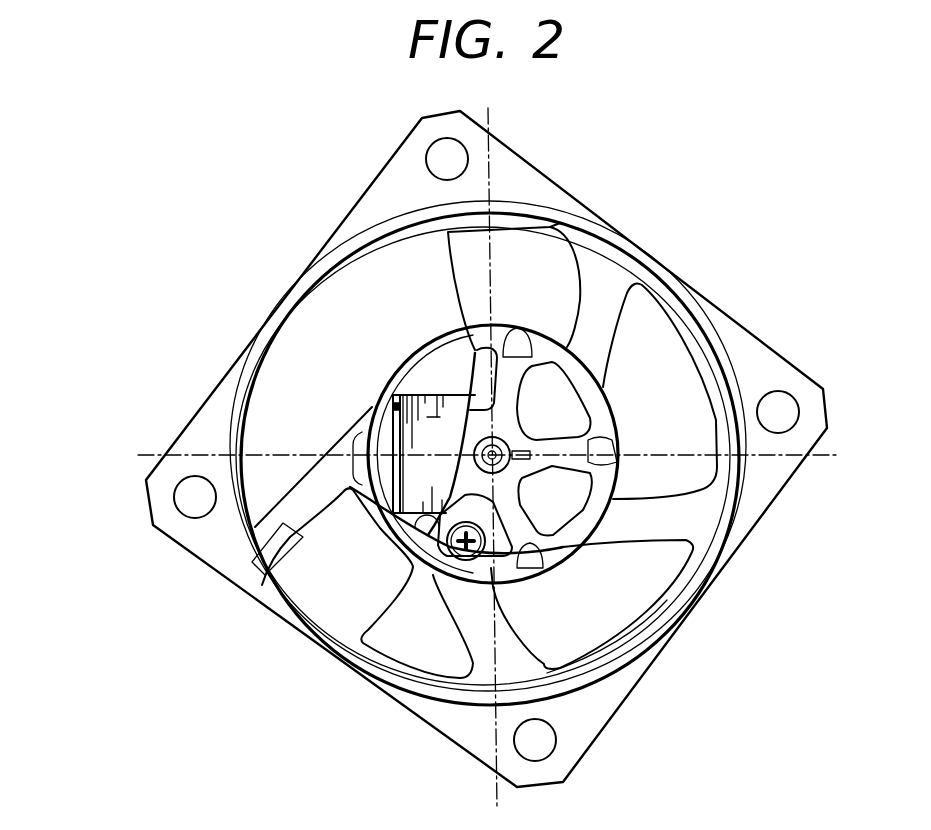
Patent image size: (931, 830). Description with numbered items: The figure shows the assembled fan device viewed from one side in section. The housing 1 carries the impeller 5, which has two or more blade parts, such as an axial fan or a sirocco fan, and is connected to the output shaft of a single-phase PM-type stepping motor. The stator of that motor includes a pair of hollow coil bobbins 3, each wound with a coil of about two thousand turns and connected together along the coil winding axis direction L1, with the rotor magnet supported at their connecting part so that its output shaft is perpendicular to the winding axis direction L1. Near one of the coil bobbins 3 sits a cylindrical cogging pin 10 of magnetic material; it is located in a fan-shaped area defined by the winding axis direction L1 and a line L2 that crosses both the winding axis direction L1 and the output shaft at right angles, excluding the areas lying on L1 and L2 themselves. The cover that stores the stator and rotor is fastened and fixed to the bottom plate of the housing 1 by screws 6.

The housing 1 is at (228, 383).
The coil bobbins 3 is at (393, 420).
The impeller 5 is at (657, 347).
The screws 6 is at (452, 522).
The cogging pin 10 is at (420, 523).
The coil winding axis direction L1 is at (138, 455).
The line L2 is at (497, 787).